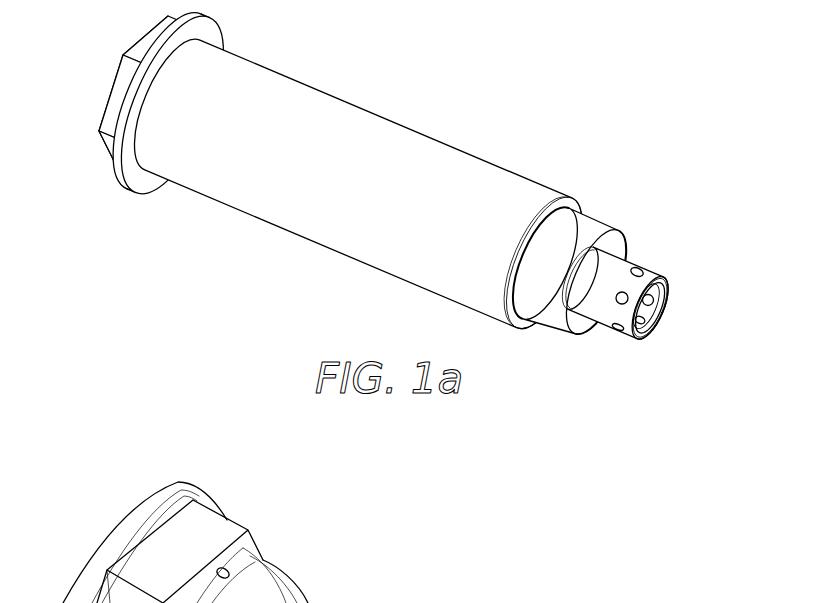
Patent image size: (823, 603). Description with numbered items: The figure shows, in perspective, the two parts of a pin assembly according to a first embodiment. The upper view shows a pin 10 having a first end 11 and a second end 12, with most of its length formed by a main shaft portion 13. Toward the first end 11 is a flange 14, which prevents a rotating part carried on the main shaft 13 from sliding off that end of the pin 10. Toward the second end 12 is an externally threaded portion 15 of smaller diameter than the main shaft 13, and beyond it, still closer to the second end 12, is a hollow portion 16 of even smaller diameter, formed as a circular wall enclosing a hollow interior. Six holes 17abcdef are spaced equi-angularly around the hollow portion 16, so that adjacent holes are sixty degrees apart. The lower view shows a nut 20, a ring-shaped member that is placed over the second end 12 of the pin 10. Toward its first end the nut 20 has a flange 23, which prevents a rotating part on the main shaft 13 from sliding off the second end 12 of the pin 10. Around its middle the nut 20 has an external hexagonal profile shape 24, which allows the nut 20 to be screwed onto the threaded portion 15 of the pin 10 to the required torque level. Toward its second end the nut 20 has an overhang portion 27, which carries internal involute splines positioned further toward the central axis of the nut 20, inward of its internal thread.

In FIG. 1A, the pin 10 is at (432, 110).
In FIG. 1A, the first end 11 is at (110, 92).
In FIG. 1A, the second end 12 is at (662, 318).
In FIG. 1A, the main shaft portion 13 is at (303, 230).
In FIG. 1A, the flange 14 is at (122, 177).
In FIG. 1A, the externally threaded portion 15 is at (542, 318).
In FIG. 1A, the hollow portion 16 is at (600, 316).
In FIG. 1A, the holes 17abcdef is at (636, 268).
In FIG. 1B, the nut 20 is at (92, 505).
In FIG. 1B, the flange 23 is at (178, 483).
In FIG. 1B, the external hexagonal profile shape 24 is at (229, 527).
In FIG. 1B, the overhang portion 27 is at (305, 602).